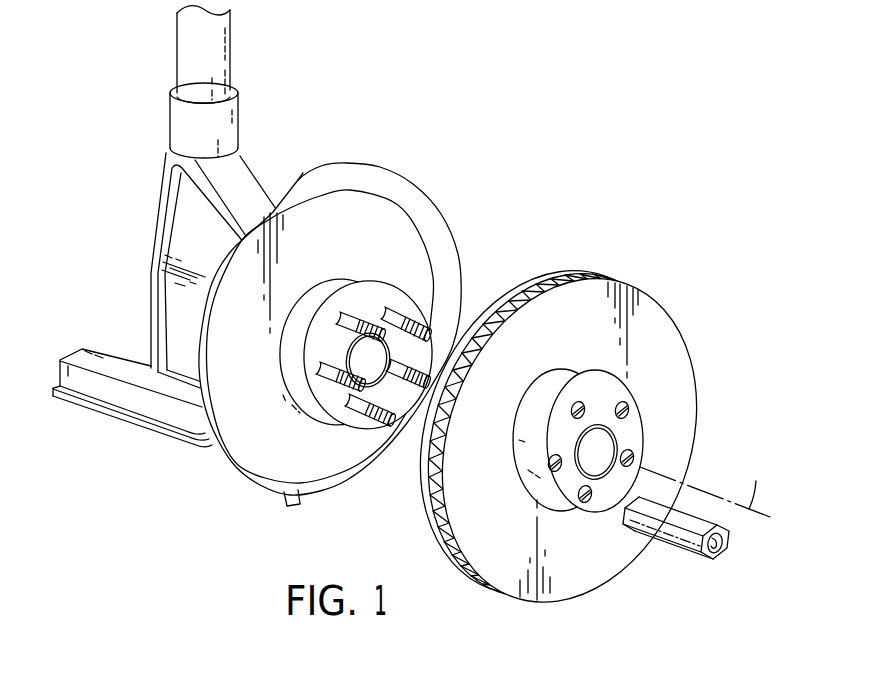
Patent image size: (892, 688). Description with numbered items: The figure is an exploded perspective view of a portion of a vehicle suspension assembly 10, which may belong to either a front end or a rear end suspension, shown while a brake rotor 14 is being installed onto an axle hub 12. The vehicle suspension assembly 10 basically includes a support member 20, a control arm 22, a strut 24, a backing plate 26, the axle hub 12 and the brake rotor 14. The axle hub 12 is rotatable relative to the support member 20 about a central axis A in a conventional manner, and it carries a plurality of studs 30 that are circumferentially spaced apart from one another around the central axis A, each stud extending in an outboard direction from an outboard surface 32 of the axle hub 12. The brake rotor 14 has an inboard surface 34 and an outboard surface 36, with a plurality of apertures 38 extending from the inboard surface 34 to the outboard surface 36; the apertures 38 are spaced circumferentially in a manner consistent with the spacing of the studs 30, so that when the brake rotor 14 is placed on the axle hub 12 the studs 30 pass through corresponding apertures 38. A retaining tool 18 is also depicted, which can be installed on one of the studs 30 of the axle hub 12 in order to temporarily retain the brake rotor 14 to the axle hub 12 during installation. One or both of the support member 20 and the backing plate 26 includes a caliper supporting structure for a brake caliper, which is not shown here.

The vehicle suspension assembly 10 is at (411, 322).
The axle hub 12 is at (354, 356).
The brake rotor 14 is at (559, 428).
The retaining tool 18 is at (677, 547).
The support member 20 is at (237, 188).
The control arm 22 is at (115, 396).
The strut 24 is at (193, 43).
The backing plate 26 is at (368, 225).
The studs 30 is at (355, 420).
The outboard surface 32 is at (327, 402).
The inboard surface 34 is at (530, 272).
The outboard surface 36 is at (562, 435).
The apertures 38 is at (575, 404).